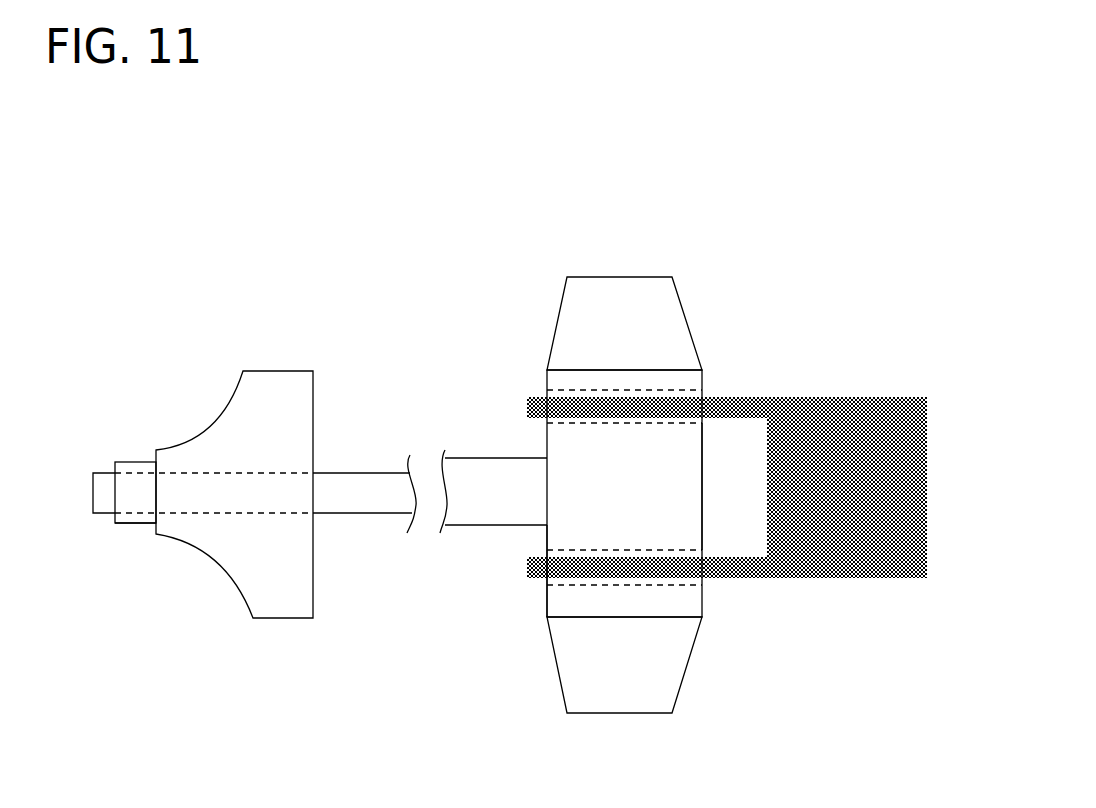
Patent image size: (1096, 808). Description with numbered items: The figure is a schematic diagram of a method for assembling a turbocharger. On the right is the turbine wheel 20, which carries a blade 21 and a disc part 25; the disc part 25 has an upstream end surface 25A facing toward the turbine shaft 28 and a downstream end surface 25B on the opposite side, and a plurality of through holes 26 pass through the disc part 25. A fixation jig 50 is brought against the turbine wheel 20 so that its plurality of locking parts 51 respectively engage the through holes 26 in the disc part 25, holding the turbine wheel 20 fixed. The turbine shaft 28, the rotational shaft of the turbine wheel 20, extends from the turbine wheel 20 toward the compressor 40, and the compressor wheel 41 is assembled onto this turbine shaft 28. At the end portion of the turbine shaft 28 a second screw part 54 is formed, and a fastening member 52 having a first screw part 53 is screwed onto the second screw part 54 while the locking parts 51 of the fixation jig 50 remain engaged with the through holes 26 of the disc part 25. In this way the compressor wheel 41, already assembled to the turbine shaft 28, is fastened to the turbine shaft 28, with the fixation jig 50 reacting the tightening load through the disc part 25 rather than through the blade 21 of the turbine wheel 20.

The turbine wheel 20 is at (670, 203).
The blade 21 is at (677, 292).
The disc part 25 is at (562, 595).
The upstream end surface 25A is at (547, 533).
The downstream end surface 25B is at (702, 437).
The through hole 26 is at (680, 392).
The turbine shaft 28 is at (362, 470).
The compressor 40 is at (203, 258).
The compressor wheel 41 is at (288, 372).
The fixation jig 50 is at (857, 407).
The locking part 51 is at (743, 395).
The fastening member 52 is at (125, 462).
The first screw part 53 is at (130, 470).
The second screw part 54 is at (145, 514).